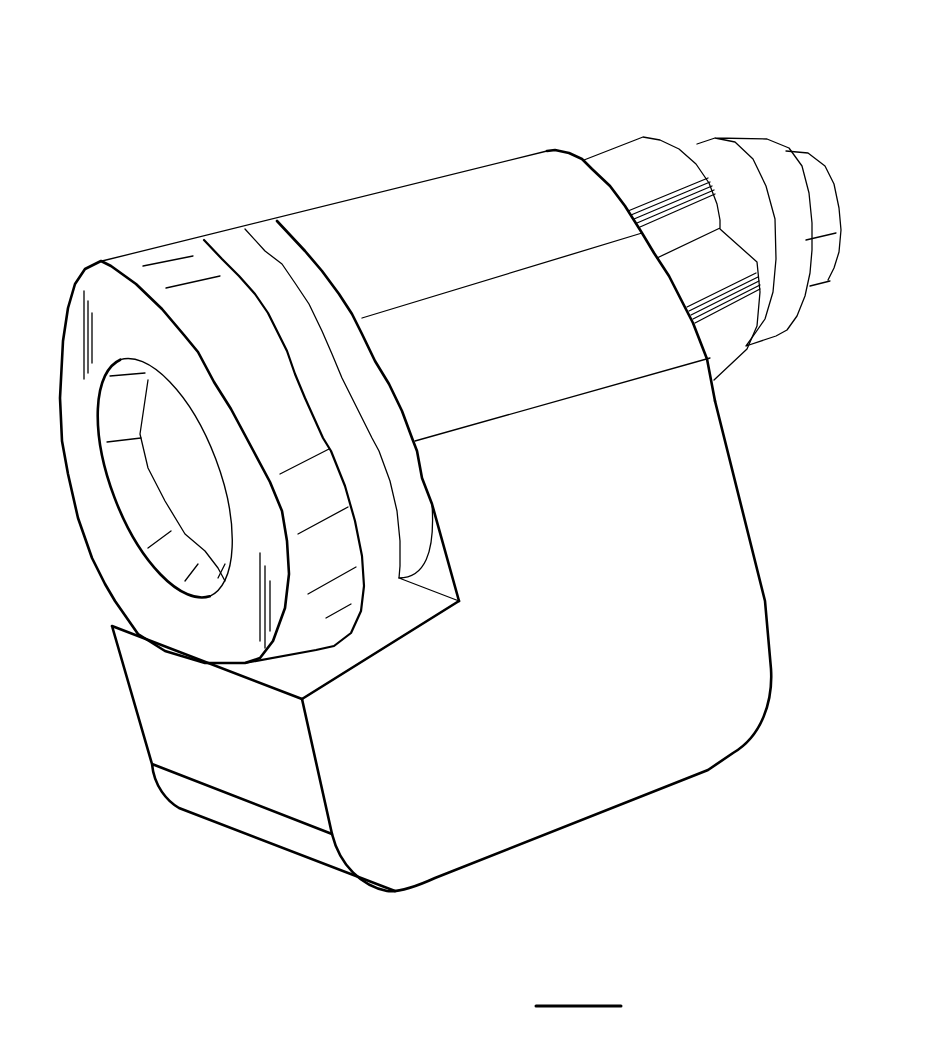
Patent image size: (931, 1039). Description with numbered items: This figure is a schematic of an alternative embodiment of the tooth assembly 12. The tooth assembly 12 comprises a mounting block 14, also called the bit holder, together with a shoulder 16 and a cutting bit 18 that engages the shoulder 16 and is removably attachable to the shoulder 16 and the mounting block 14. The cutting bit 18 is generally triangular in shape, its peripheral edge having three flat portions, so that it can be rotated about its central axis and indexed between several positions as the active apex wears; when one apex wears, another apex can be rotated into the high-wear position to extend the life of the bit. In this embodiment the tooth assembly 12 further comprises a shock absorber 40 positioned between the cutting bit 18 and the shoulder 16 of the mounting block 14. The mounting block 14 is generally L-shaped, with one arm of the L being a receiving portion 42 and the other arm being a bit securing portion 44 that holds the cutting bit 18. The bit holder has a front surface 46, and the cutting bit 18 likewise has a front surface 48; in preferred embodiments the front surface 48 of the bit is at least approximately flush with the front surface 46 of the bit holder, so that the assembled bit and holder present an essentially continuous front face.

The tooth assembly 12 is at (279, 80).
The mounting block 14 is at (447, 178).
The shoulder 16 is at (286, 254).
The cutting bit 18 is at (100, 263).
The shock absorber 40 is at (248, 263).
The receiving portion 42 is at (658, 638).
The bit securing portion 44 is at (565, 487).
The front surface of the bit holder 46 is at (227, 743).
The front surface of the bit 48 is at (122, 563).